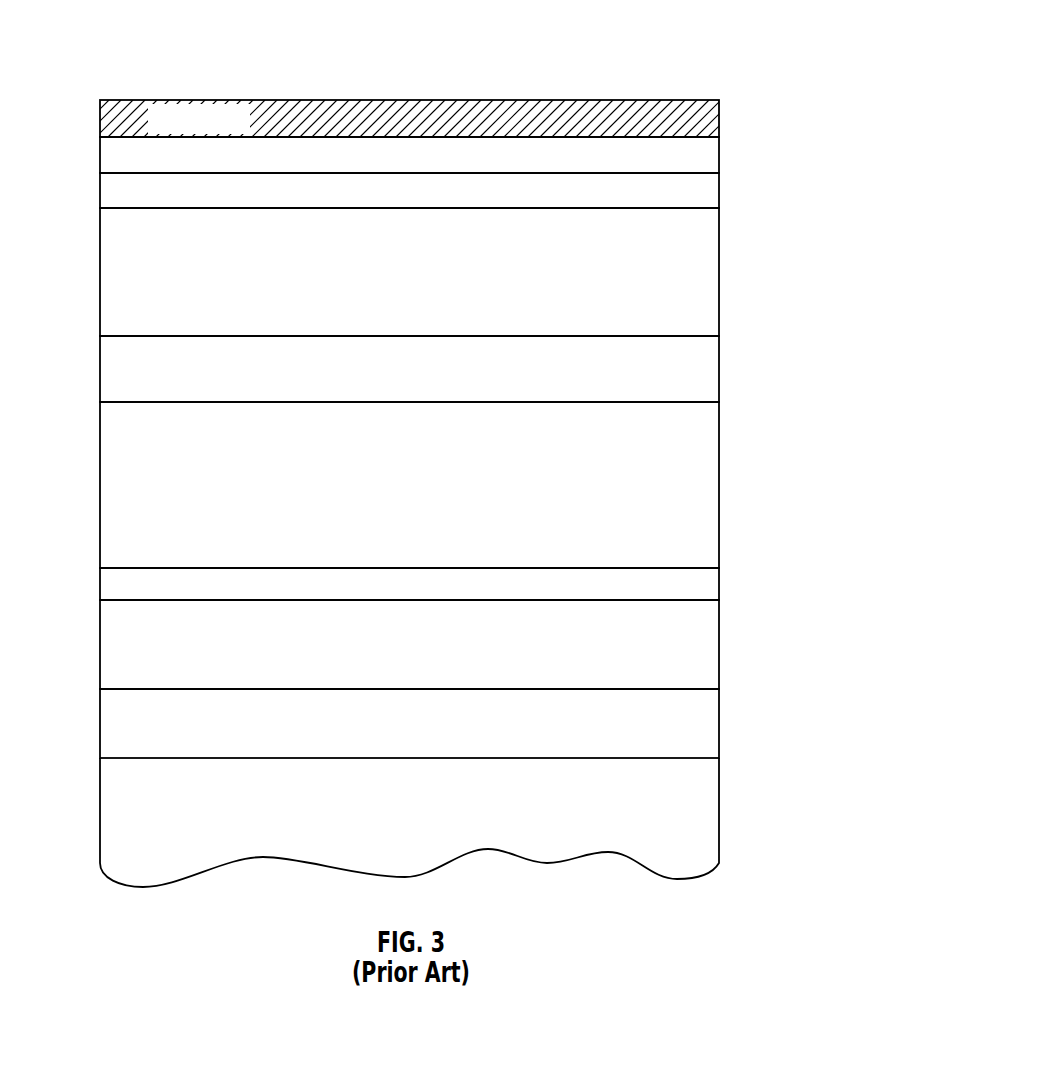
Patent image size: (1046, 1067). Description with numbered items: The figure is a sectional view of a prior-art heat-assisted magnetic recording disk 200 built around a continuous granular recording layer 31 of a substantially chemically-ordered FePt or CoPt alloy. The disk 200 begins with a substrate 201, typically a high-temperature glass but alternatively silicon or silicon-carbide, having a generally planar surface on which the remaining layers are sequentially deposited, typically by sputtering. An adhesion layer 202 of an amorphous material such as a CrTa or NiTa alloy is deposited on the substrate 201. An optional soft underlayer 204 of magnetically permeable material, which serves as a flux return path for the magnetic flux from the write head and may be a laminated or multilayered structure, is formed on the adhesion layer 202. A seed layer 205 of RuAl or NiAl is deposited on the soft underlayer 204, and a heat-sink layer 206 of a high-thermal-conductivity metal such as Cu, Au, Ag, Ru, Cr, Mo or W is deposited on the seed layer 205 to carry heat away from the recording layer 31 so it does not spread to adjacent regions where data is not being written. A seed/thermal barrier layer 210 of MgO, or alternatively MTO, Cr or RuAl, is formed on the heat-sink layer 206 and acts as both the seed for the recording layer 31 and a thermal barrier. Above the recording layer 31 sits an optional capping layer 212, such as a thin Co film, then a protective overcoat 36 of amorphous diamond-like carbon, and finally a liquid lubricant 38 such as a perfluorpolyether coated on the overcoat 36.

The HAMR disk 200 is at (693, 44).
The liquid lubricant 38 is at (100, 122).
The protective overcoat (OC) 36 is at (100, 155).
The capping layer 212 is at (100, 192).
The recording layer (RL) 31 is at (100, 270).
The seed/thermal barrier layer 210 is at (100, 372).
The heat-sink layer 206 is at (100, 484).
The seed layer 205 is at (100, 585).
The soft underlayer (SUL) 204 is at (100, 643).
The adhesion layer 202 is at (100, 723).
The substrate 201 is at (100, 810).